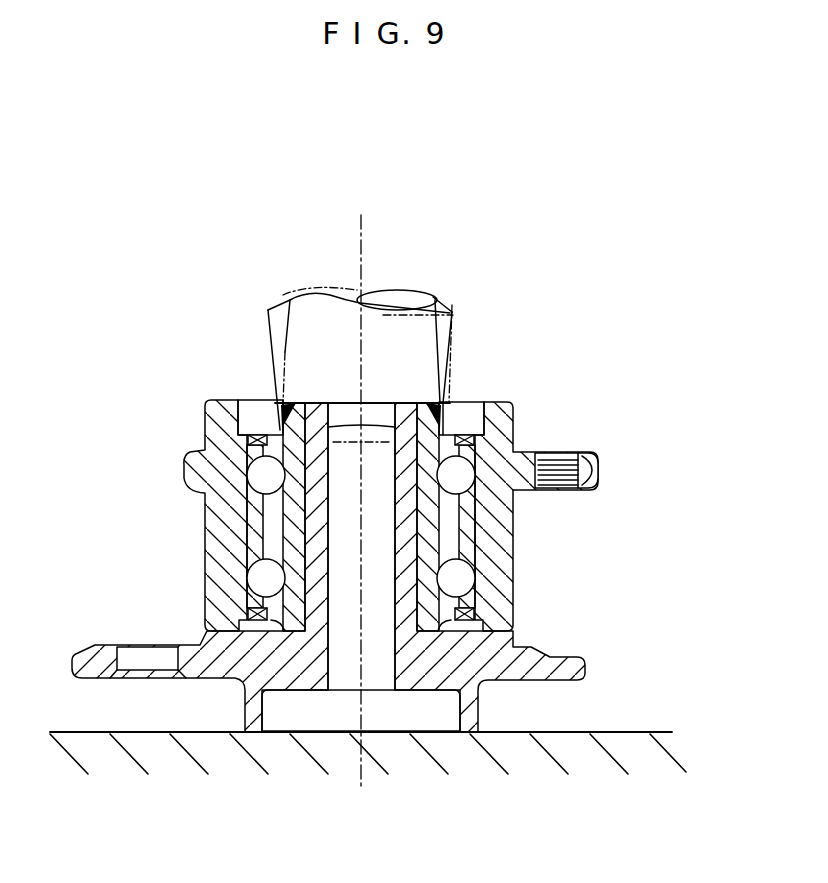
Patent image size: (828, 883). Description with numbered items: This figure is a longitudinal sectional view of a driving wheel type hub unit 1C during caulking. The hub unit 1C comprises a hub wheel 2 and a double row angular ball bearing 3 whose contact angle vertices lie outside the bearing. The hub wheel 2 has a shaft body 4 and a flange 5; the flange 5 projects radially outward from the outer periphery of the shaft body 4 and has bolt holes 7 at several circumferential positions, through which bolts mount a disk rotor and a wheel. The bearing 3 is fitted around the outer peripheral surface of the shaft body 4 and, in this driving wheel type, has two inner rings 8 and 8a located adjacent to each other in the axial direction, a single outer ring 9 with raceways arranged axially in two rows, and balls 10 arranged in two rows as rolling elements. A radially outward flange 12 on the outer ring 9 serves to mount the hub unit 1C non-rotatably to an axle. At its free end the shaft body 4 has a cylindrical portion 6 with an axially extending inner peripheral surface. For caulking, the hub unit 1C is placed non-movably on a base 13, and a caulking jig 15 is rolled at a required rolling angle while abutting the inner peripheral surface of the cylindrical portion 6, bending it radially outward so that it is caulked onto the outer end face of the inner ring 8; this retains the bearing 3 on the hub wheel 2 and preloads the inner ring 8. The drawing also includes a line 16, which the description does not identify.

The hub unit 1C is at (605, 235).
The hub wheel 2 is at (288, 733).
The double row angular ball bearing 3 is at (200, 573).
The shaft body 4 is at (407, 515).
The flange 5 is at (580, 675).
The cylindrical portion 6 is at (292, 413).
The bolt holes 7 is at (148, 672).
The inner ring 8 is at (448, 430).
The inner ring 8a is at (443, 616).
The outer ring 9 is at (513, 518).
The balls 10 is at (262, 578).
The radially outward flange 12 is at (592, 452).
The base 13 is at (612, 732).
The caulking jig 15 is at (397, 296).
The axis line 16 is at (363, 248).